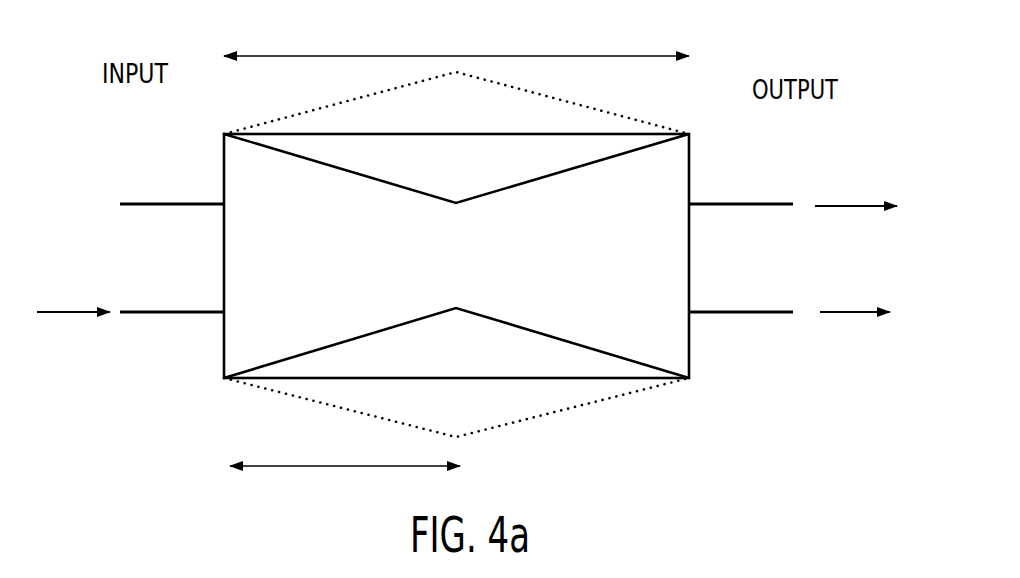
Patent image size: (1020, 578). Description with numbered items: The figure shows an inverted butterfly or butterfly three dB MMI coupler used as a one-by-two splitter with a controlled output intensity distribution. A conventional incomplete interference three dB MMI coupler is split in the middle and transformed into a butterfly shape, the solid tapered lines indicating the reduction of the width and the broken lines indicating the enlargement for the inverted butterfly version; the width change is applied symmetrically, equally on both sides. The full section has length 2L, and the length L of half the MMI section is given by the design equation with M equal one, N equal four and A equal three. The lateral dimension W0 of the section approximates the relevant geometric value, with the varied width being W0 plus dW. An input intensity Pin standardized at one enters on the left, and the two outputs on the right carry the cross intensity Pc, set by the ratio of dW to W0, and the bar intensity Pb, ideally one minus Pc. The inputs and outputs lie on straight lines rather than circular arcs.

The lateral dimension of the MMI section W0 is at (237, 137).
The coupler length 2L is at (456, 42).
The length of half the MMI section L is at (345, 484).
The input intensity Pin is at (73, 291).
The cross intensity Pc is at (856, 188).
The bar intensity Pb is at (855, 294).